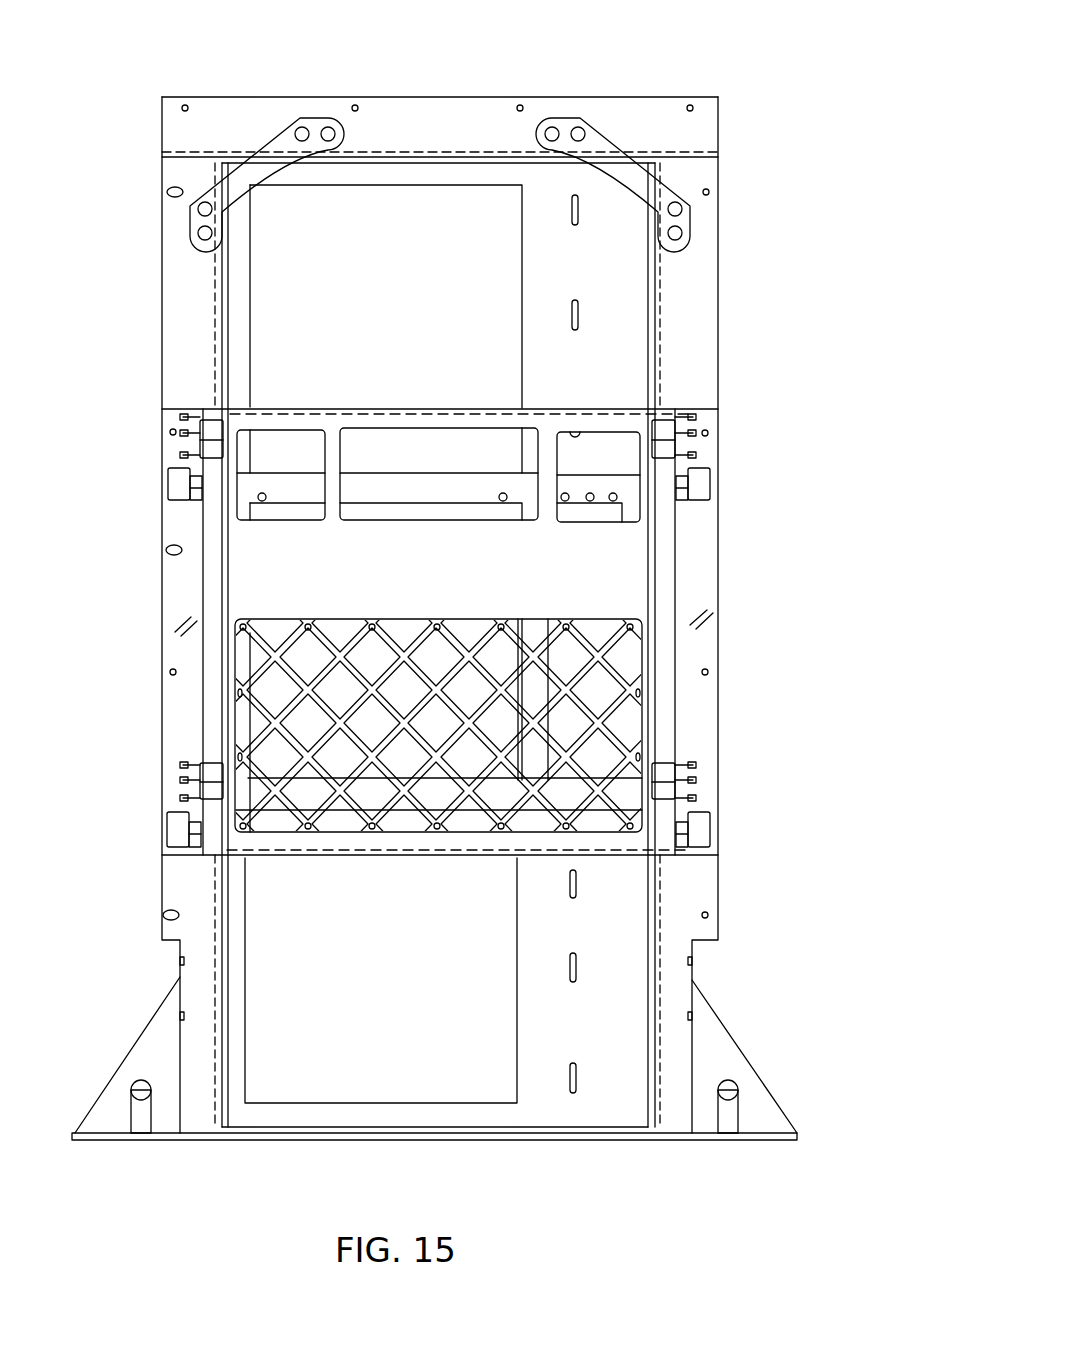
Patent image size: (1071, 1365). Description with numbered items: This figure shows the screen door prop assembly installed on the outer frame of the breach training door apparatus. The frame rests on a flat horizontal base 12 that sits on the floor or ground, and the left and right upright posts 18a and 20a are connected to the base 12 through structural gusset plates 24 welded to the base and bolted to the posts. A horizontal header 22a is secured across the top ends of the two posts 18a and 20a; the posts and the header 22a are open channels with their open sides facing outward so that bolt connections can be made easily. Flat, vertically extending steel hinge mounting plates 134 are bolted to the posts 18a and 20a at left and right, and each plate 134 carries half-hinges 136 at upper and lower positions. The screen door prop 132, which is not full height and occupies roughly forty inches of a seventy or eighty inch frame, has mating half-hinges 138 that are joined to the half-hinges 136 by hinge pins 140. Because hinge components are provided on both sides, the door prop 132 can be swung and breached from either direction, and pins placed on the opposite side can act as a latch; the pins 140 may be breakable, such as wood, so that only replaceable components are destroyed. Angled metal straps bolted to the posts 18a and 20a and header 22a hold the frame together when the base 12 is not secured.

The base 12 is at (623, 1142).
The upright post 18a is at (175, 292).
The upright post 20a is at (712, 278).
The header 22a is at (633, 103).
The gusset plate 24 is at (693, 1063).
The screen door prop 132 is at (437, 410).
The hinge mounting plate 134 is at (703, 593).
The half-hinge 136 is at (707, 497).
The half-hinge 138 is at (665, 420).
The hinge pin 140 is at (694, 446).